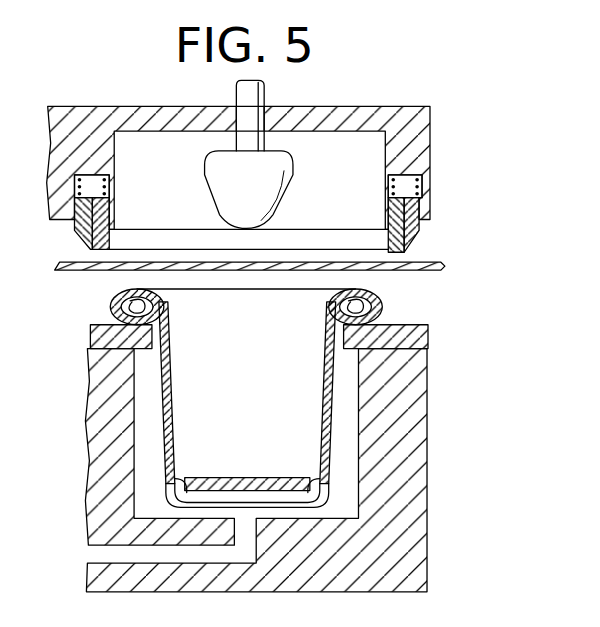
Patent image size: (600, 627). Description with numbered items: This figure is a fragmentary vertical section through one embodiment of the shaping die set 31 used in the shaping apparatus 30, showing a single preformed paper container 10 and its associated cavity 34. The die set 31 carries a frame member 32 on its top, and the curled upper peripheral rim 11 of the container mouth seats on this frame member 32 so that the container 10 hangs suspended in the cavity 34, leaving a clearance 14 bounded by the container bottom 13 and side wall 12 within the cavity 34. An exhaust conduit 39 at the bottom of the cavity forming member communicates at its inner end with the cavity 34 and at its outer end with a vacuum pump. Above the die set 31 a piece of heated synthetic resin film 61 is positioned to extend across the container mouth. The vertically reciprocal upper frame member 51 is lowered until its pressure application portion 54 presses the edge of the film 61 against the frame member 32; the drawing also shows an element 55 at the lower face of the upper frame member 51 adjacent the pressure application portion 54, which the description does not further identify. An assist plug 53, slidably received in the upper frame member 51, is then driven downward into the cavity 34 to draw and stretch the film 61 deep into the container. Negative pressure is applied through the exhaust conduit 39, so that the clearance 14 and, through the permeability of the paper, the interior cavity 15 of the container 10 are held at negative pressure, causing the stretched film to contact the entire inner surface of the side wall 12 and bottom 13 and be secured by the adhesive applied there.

The shaping apparatus 30 is at (408, 79).
The upper frame member 51 is at (420, 127).
The assist plug 53 is at (275, 180).
The pressure application portion 54 is at (400, 210).
The pressure plate 55 is at (420, 225).
The heated synthetic resin film 61 is at (443, 263).
The preformed container 10 is at (382, 305).
The curled upper peripheral rim 11 is at (109, 305).
The side wall 12 is at (168, 401).
The bottom wall 13 is at (228, 482).
The clearance 14 is at (177, 482).
The cavity in the paper container 15 is at (255, 394).
The die set 31 is at (437, 441).
The frame member 32 is at (428, 335).
The cavity 34 is at (357, 466).
The exhaust conduit 39 is at (96, 553).